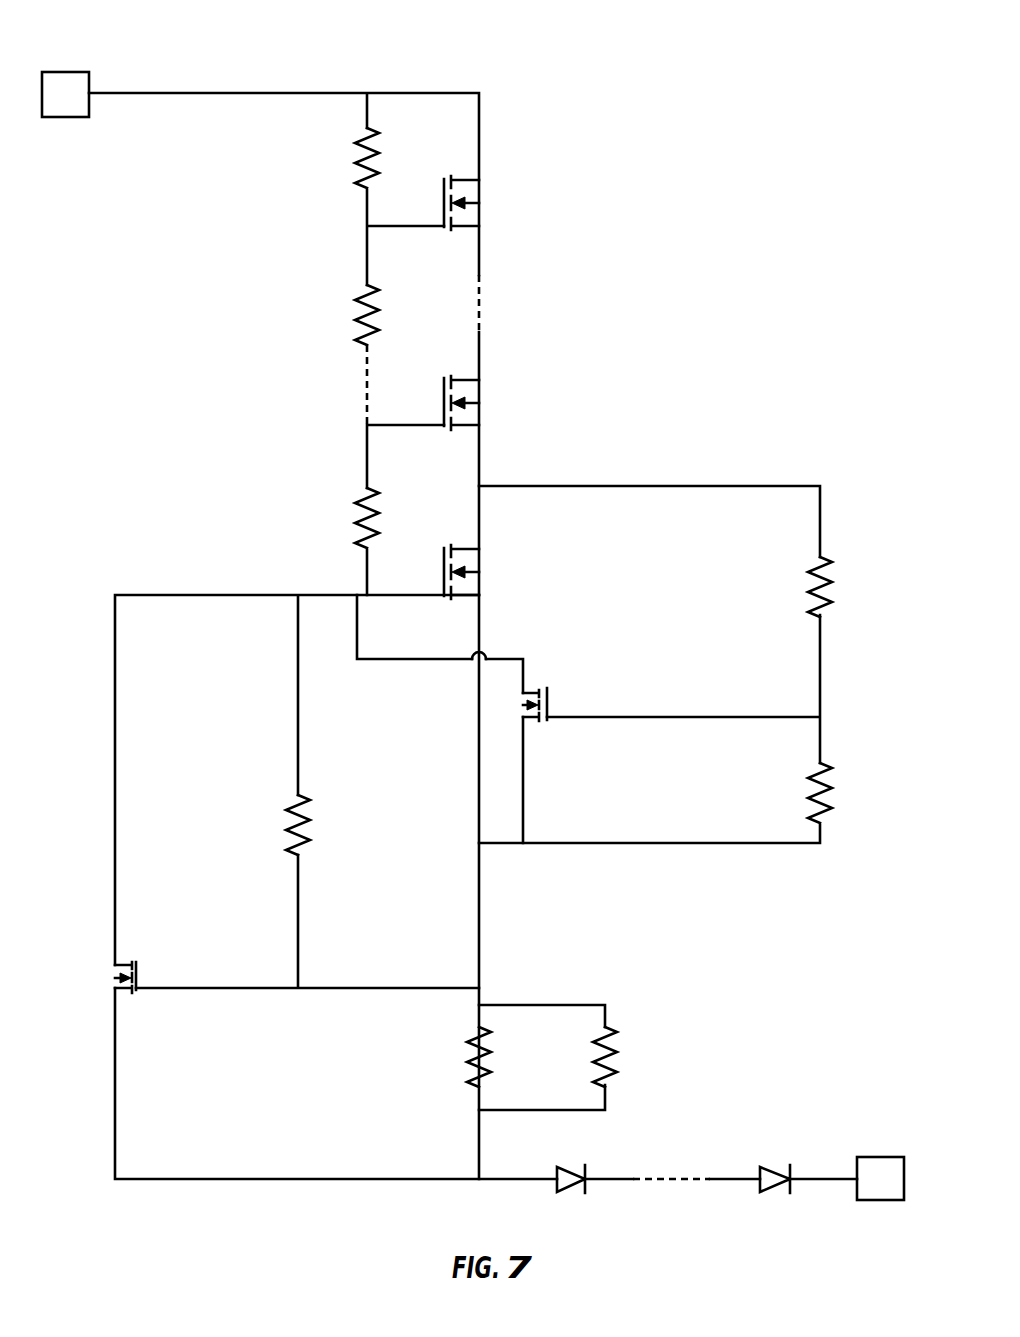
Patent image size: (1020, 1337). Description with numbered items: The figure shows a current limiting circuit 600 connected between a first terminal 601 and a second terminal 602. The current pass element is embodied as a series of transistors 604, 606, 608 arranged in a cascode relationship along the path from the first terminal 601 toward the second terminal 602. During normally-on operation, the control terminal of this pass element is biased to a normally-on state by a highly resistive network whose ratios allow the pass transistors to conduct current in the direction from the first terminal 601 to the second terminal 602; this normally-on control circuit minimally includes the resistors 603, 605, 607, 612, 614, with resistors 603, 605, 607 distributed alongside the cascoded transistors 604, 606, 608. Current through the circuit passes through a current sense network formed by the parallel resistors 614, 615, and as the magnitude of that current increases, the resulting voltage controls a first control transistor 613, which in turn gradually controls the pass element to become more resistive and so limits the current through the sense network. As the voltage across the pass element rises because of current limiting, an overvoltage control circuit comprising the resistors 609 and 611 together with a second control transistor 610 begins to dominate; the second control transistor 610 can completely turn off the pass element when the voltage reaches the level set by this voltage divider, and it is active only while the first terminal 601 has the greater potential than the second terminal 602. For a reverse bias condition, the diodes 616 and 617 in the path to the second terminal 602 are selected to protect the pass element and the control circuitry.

The current limiting circuit 600 is at (257, 64).
The first terminal T1 601 is at (78, 70).
The second terminal T2 602 is at (880, 1155).
The resistor 603 is at (356, 149).
The transistor 604 is at (481, 206).
The resistor 605 is at (356, 305).
The transistor 606 is at (481, 406).
The resistor 607 is at (356, 507).
The transistor 608 is at (481, 576).
The resistor 609 is at (826, 594).
The second control transistor 610 is at (548, 698).
The resistor 611 is at (826, 802).
The resistor 612 is at (286, 812).
The first control transistor 613 is at (112, 972).
The resistor 614 is at (458, 1052).
The resistor 615 is at (616, 1046).
The diode 616 is at (560, 1170).
The diode 617 is at (772, 1165).